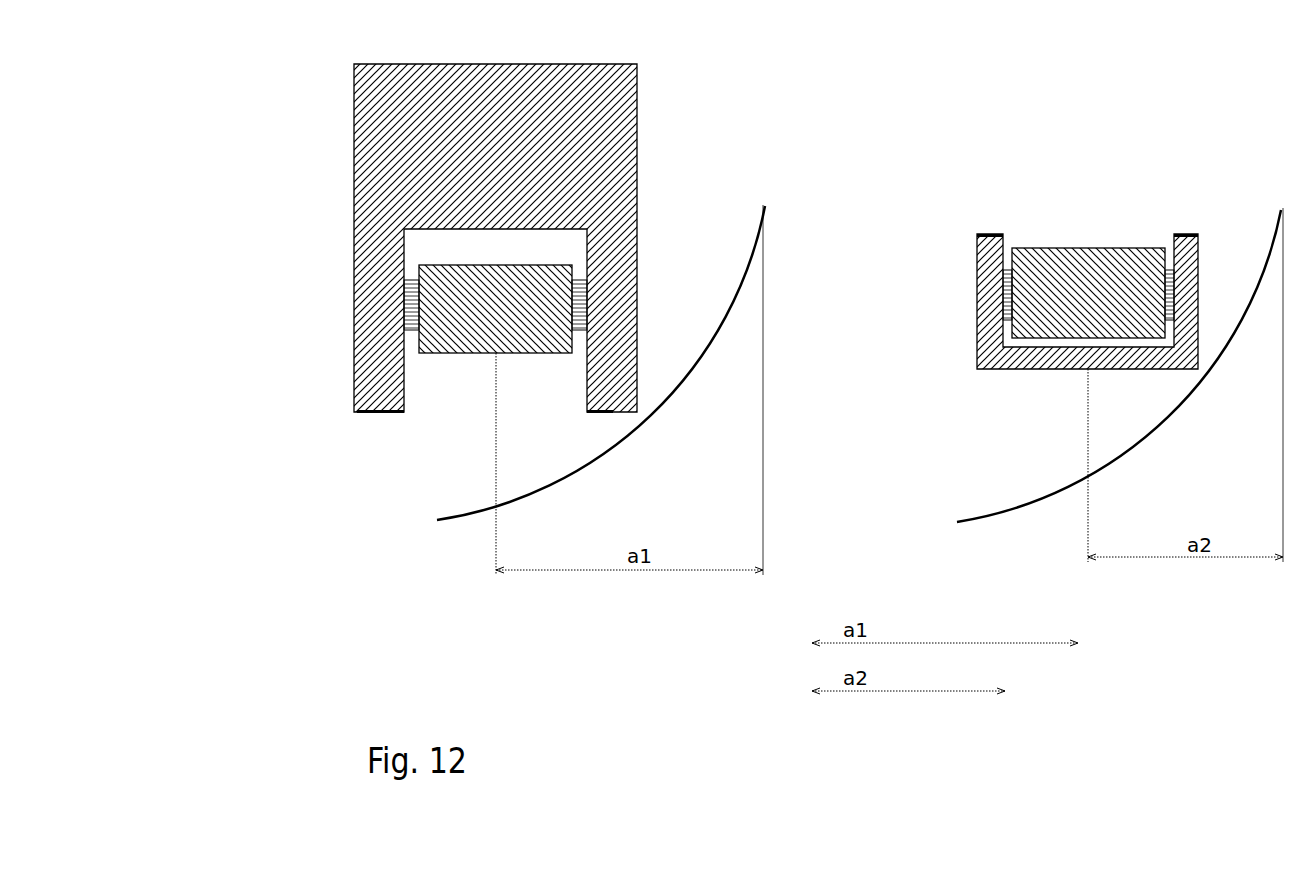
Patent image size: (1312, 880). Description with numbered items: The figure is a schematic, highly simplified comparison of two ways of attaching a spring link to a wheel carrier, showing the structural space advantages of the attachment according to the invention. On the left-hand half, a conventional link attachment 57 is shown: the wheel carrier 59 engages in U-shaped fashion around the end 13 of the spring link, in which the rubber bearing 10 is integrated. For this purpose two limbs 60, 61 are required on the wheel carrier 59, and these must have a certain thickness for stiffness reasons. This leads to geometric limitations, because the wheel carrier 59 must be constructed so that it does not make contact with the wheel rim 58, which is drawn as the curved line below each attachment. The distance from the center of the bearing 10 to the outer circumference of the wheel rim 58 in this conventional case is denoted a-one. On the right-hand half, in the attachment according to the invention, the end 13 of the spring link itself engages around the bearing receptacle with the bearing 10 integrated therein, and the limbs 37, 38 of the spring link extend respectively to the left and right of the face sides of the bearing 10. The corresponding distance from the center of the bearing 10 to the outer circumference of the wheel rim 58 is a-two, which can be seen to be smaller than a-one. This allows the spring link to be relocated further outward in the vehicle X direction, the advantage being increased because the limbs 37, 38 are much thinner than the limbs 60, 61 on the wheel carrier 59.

The conventional link attachment 57 is at (454, 221).
The wheel carrier 59 is at (503, 221).
The limb 60 is at (354, 330).
The limb 61 is at (637, 273).
The rubber bearing 10 is at (443, 353).
The wheel rim 58 is at (655, 410).
The end of the spring link 13 is at (1069, 244).
The limb 37 is at (977, 285).
The limb 38 is at (1198, 255).